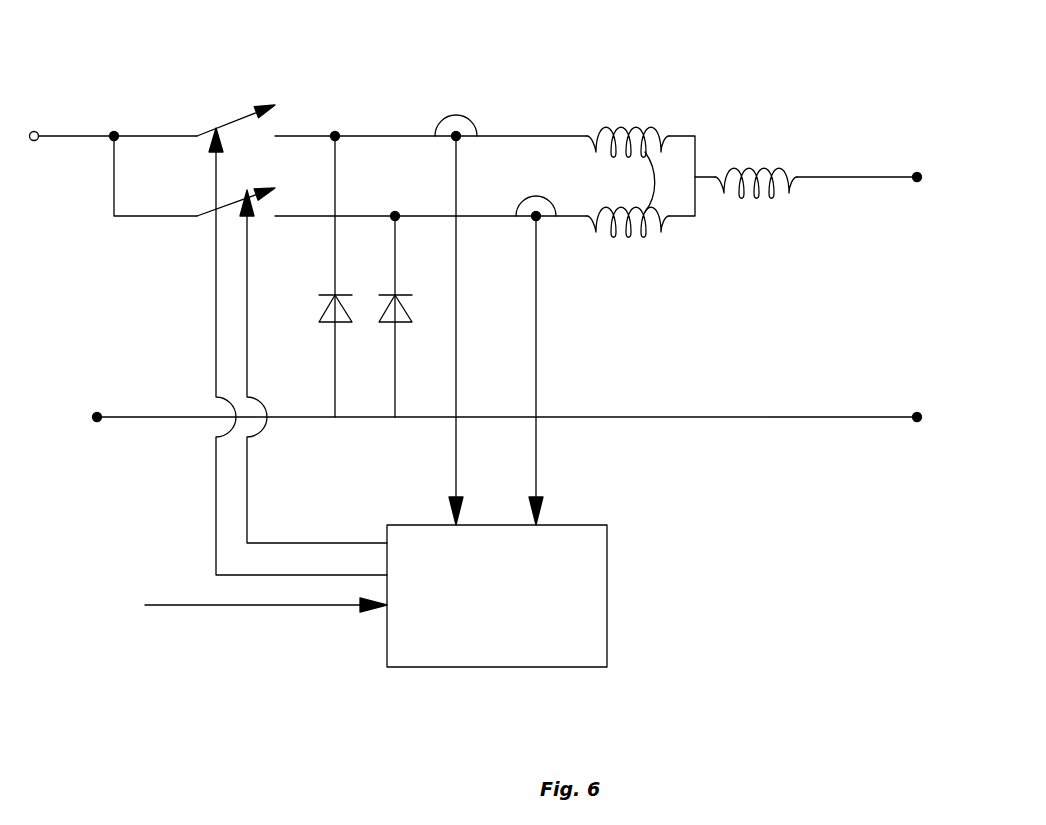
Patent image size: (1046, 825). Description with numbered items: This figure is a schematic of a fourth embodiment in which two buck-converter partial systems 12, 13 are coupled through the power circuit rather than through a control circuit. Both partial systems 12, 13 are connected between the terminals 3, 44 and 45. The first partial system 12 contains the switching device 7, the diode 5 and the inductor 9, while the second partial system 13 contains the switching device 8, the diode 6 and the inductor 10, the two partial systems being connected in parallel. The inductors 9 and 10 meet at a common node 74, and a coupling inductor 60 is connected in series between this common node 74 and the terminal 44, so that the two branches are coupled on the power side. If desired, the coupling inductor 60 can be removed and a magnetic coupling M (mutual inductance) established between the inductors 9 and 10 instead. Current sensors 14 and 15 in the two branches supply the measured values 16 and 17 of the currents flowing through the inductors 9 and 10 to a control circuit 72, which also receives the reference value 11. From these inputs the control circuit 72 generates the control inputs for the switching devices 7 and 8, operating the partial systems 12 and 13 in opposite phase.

The terminal 3 is at (35, 129).
The switching device 7 is at (240, 121).
The switching device 8 is at (229, 204).
The partial system 12 is at (186, 94).
The partial system 13 is at (194, 241).
The diode 5 is at (330, 320).
The diode 6 is at (385, 310).
The current sensor 14 is at (456, 114).
The current sensor 15 is at (536, 195).
The measured value 16 is at (456, 322).
The measured value 17 is at (537, 358).
The inductor 9 is at (622, 128).
The inductor 10 is at (626, 230).
The magnetic coupling M is at (650, 182).
The common node 74 is at (697, 177).
The coupling inductor 60 is at (770, 172).
The terminal 44 is at (913, 182).
The terminal 45 is at (915, 416).
The control circuit 72 is at (607, 570).
The reference value 11 is at (175, 605).